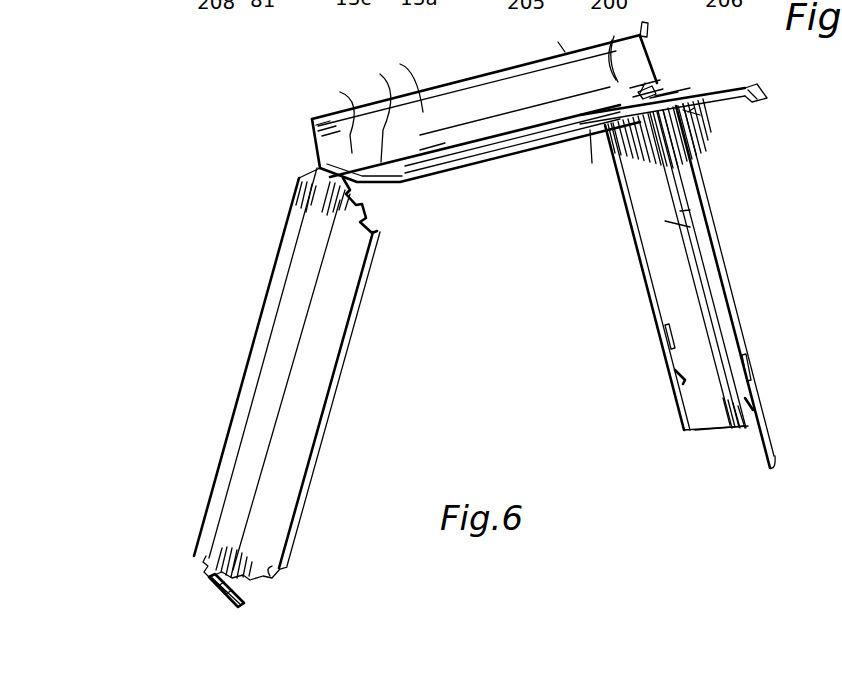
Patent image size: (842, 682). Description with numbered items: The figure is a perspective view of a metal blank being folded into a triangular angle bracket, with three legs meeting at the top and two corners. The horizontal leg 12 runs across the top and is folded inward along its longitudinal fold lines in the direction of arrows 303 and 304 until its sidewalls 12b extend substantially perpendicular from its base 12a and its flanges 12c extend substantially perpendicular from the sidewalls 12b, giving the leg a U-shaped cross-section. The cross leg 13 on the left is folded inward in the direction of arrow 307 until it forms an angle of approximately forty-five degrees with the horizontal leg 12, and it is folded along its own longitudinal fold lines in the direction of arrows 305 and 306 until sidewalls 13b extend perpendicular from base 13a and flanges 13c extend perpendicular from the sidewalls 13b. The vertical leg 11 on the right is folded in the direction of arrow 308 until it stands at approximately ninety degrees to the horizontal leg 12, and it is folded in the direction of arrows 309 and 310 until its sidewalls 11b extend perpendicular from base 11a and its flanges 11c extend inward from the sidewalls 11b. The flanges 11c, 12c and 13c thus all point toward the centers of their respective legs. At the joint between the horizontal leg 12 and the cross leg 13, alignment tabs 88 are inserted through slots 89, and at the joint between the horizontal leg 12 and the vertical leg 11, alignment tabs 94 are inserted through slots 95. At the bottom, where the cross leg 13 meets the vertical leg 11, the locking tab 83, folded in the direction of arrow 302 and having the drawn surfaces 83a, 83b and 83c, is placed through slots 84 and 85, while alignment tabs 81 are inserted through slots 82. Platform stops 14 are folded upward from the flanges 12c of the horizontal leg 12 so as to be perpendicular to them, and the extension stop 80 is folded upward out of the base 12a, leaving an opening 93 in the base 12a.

The vertical leg 11 is at (650, 271).
The base 11a is at (680, 211).
The sidewalls 11b is at (665, 221).
The flanges 11c is at (713, 238).
The horizontal leg 12 is at (463, 163).
The base 12a is at (367, 113).
The sidewalls 12b is at (488, 178).
The flanges 12c is at (571, 107).
The cross leg 13 is at (320, 389).
The base 13a is at (307, 260).
The sidewalls 13b is at (288, 254).
The flanges 13c is at (350, 328).
The platform stops 14 is at (647, 30).
The extension stop 80 is at (648, 90).
The alignment tabs 81 is at (205, 545).
The slots 82 is at (667, 346).
The locking tab 83 is at (221, 599).
The foot tab edge 83a is at (214, 576).
The foot tab face 83b is at (226, 589).
The foot tab edge 83c is at (240, 606).
The slot 84 is at (673, 382).
The slot 85 is at (726, 428).
The alignment tabs 88 is at (303, 170).
The slots 89 is at (334, 115).
The opening 93 is at (662, 90).
The alignment tabs 94 is at (690, 113).
The slots 95 is at (720, 125).
The arrow 302 is at (264, 583).
The arrow 303 is at (492, 55).
The arrow 304 is at (545, 151).
The arrow 305 is at (210, 487).
The arrow 306 is at (298, 556).
The arrow 307 is at (241, 324).
The arrow 308 is at (769, 268).
The arrow 309 is at (681, 440).
The arrow 310 is at (720, 487).